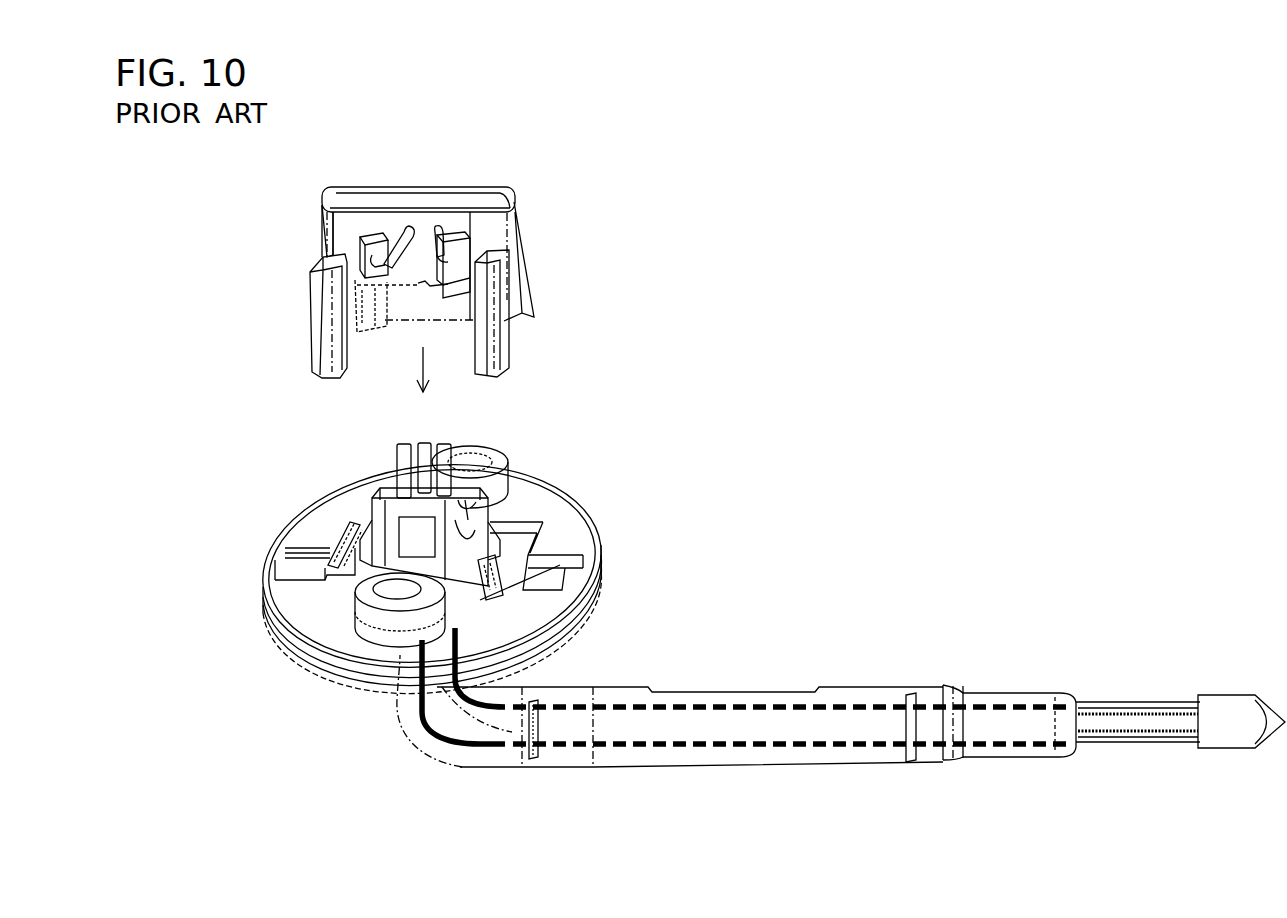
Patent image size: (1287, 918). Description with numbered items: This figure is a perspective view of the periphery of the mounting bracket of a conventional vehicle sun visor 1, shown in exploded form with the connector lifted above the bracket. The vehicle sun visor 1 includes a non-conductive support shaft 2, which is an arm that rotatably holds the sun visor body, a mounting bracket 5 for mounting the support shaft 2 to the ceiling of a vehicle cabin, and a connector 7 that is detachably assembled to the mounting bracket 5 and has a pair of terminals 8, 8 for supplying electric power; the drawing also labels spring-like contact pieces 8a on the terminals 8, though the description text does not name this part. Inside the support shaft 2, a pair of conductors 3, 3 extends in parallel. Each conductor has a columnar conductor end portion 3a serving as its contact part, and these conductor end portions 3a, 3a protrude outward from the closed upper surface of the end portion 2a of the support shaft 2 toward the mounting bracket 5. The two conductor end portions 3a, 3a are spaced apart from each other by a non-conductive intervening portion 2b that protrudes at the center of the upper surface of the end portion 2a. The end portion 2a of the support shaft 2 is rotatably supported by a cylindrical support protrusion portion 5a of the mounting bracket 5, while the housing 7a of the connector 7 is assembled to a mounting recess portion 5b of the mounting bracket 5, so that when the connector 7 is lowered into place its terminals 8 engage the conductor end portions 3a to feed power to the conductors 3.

The vehicle sun visor 1 is at (727, 442).
The support shaft 2 is at (600, 775).
The end portion 2a is at (490, 494).
The intervening portion 2b is at (408, 444).
The conductors 3 is at (768, 690).
The conductor end portion 3a is at (410, 444).
The mounting bracket 5 is at (600, 510).
The support protrusion portion 5a is at (470, 565).
The mounting recess portion 5b is at (340, 571).
The connector 7 is at (526, 249).
The housing 7a is at (324, 228).
The terminals 8 is at (393, 272).
The spring contact pieces 8a is at (392, 245).